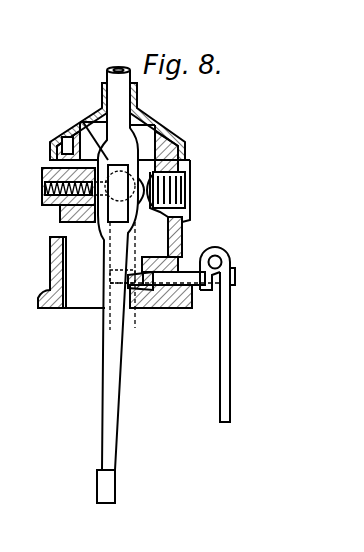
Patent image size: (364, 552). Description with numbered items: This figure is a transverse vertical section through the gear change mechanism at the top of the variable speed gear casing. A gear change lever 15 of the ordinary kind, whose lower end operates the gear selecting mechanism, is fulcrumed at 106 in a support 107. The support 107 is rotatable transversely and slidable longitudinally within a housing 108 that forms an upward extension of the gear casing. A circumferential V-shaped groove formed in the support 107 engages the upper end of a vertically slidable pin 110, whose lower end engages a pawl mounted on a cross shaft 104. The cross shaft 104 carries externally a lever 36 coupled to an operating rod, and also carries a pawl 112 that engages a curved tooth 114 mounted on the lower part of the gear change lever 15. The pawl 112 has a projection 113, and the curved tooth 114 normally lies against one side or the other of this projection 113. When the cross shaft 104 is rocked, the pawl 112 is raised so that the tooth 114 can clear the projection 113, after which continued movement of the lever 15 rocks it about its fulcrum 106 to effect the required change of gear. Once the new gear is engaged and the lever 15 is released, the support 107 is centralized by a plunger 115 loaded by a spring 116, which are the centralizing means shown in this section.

The gear change lever 15 is at (115, 82).
The support 107 is at (83, 122).
The fulcrum 106 is at (180, 134).
The spring 116 is at (50, 170).
The pawl 112 is at (130, 226).
The housing 108 is at (190, 224).
The cross shaft 104 is at (176, 277).
The curved tooth 114 is at (177, 306).
The projection 113 is at (125, 316).
The vertically slidable pin 110 is at (71, 272).
The plunger 115 is at (104, 250).
The lever 36 is at (220, 383).